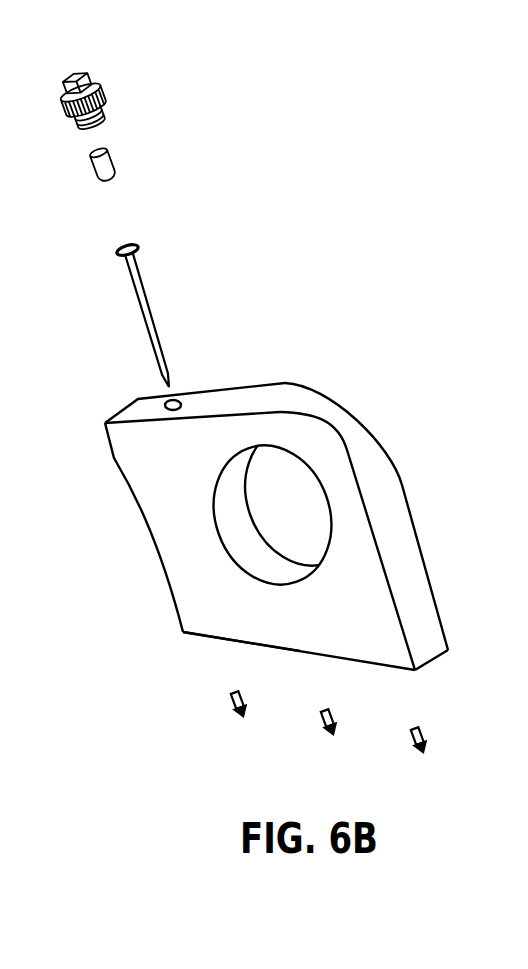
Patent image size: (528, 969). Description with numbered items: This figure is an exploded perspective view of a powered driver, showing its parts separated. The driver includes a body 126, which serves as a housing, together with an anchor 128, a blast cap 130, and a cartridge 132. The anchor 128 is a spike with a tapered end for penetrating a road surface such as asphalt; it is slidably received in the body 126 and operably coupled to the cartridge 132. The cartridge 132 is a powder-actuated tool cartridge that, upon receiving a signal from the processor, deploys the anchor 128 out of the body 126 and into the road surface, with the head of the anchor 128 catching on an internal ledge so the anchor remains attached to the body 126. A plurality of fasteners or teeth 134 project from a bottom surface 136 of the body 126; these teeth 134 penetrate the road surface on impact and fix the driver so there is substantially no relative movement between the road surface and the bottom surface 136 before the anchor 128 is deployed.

The body 126 is at (407, 570).
The anchor 128 is at (147, 312).
The blast cap 130 is at (104, 90).
The cartridge 132 is at (115, 163).
The teeth 134 is at (245, 708).
The bottom surface 136 is at (199, 640).